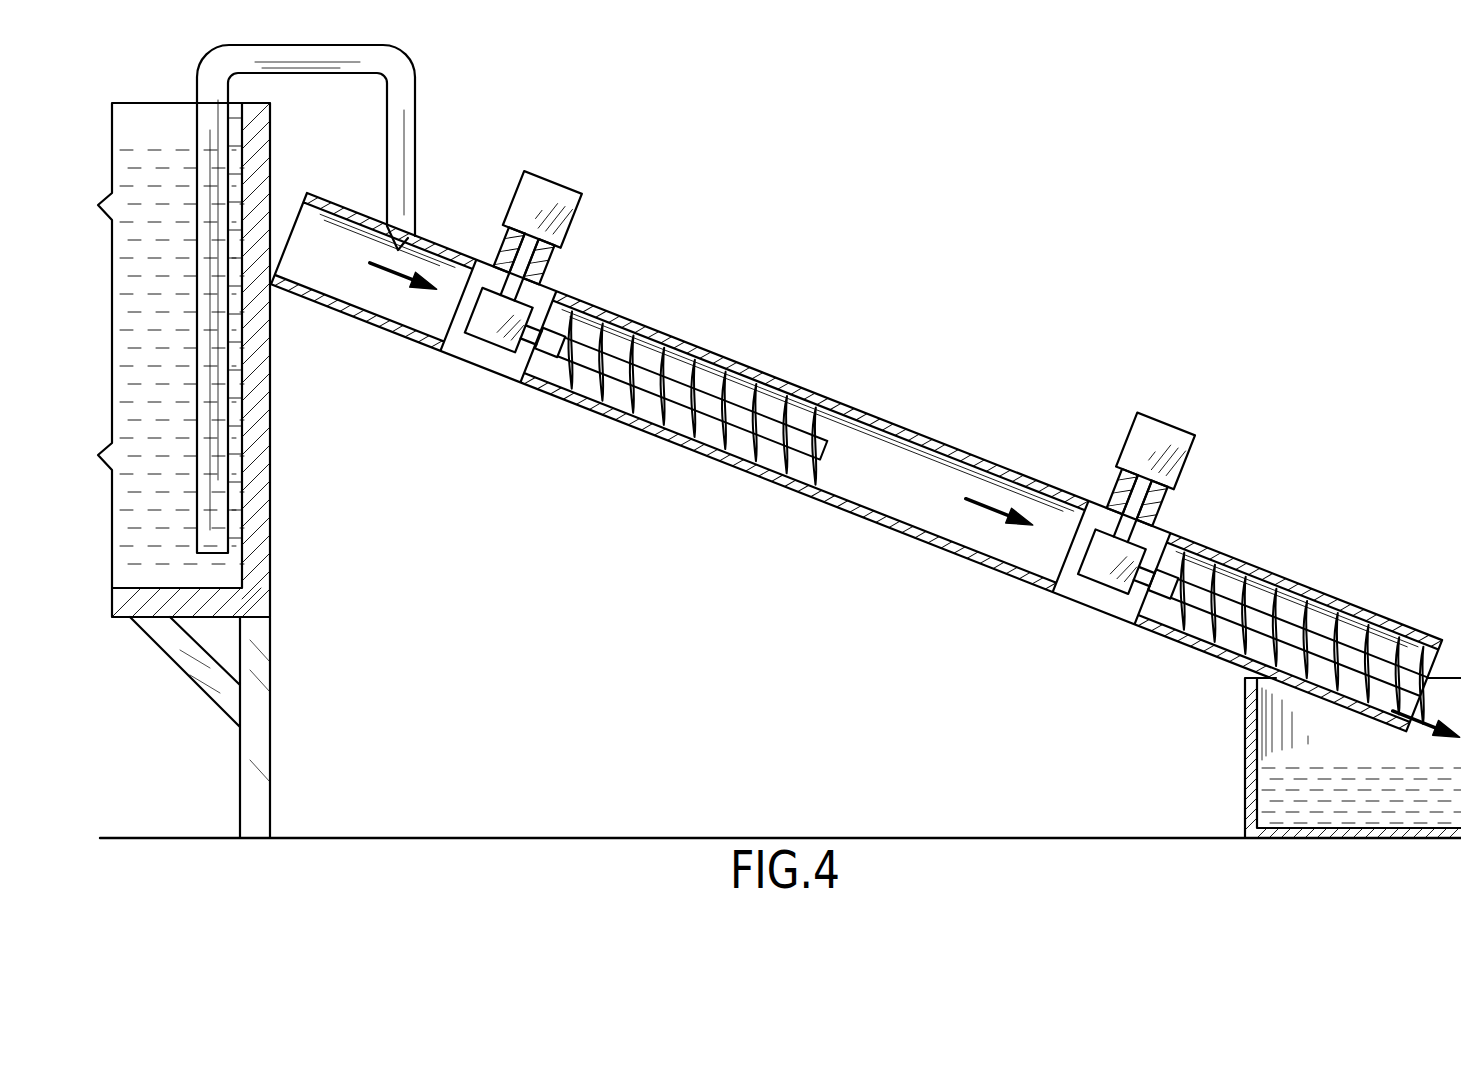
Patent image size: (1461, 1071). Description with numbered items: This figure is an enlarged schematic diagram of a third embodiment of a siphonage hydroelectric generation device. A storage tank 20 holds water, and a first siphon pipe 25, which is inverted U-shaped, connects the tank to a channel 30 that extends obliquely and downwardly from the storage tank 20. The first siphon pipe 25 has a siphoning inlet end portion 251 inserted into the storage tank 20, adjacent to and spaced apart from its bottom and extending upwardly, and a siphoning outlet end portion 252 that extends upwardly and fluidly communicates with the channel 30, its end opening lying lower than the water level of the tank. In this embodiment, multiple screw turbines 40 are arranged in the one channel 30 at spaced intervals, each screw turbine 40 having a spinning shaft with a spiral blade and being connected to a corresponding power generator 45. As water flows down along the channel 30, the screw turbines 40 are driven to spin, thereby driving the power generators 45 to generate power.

The storage tank 20 is at (285, 627).
The first siphon pipe 25 is at (427, 77).
The siphoning inlet end portion 251 is at (214, 556).
The siphoning outlet end portion 252 is at (403, 252).
The channel 30 is at (870, 412).
The screw turbine 40 is at (1258, 590).
The power generator 45 is at (1165, 445).